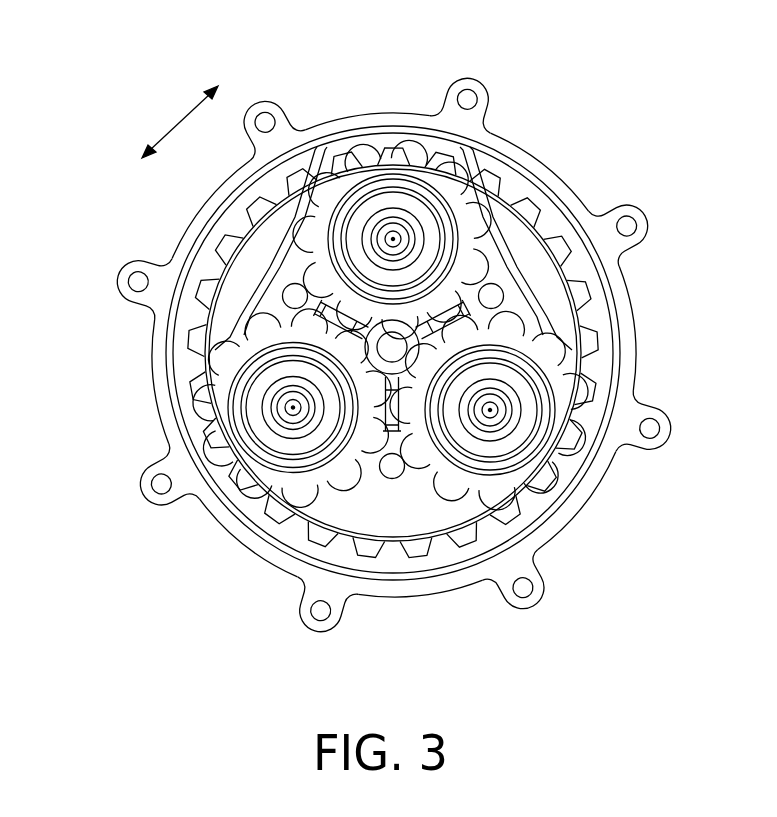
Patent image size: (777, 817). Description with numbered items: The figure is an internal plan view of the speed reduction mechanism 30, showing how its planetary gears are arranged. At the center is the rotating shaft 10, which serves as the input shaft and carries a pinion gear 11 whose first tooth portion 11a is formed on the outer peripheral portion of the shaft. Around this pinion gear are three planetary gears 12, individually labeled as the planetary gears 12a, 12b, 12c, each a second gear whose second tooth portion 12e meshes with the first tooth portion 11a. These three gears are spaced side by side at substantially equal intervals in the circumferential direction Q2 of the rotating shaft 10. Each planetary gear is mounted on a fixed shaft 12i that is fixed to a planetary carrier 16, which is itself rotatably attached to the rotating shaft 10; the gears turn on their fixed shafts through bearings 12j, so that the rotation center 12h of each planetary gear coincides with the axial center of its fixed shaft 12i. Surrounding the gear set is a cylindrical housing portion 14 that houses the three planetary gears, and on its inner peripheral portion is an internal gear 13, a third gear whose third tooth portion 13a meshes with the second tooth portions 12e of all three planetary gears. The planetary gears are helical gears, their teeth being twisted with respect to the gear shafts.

The speed reduction mechanism 30 is at (368, 333).
The pinion gear 11 is at (570, 219).
The first tooth portion 11a is at (340, 307).
The internal gear 13 is at (614, 346).
The third tooth portion 13a is at (582, 277).
The housing portion 14 is at (620, 320).
The planetary gears 12 is at (368, 290).
The planetary gear 12a is at (262, 390).
The planetary gear 12b is at (540, 510).
The planetary gear 12c is at (407, 205).
The fixed shaft 12i is at (393, 239).
The bearing 12j is at (318, 147).
The second tooth portion 12e is at (420, 145).
The rotation center 12h is at (401, 160).
The rotating shaft 10 is at (393, 440).
The planetary carrier 16 is at (374, 490).
The circumferential direction Q2 is at (180, 122).